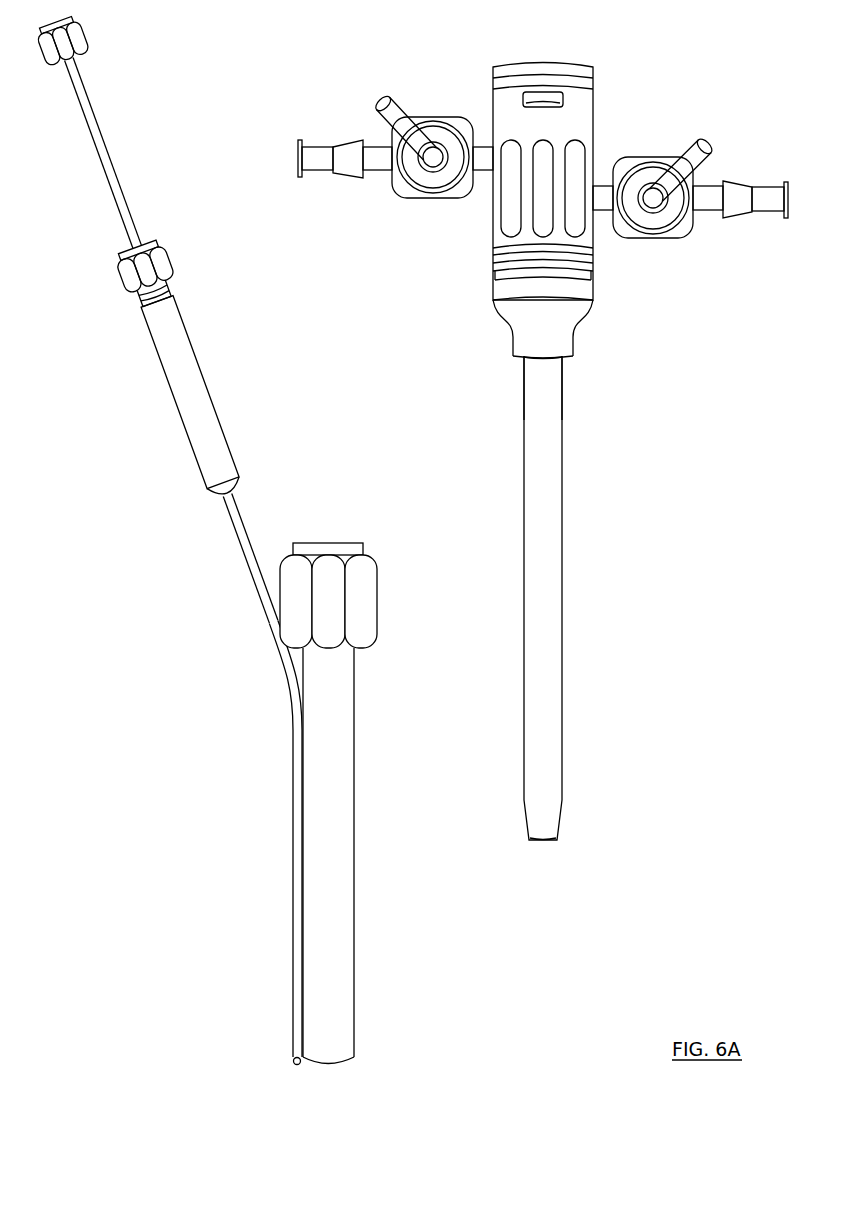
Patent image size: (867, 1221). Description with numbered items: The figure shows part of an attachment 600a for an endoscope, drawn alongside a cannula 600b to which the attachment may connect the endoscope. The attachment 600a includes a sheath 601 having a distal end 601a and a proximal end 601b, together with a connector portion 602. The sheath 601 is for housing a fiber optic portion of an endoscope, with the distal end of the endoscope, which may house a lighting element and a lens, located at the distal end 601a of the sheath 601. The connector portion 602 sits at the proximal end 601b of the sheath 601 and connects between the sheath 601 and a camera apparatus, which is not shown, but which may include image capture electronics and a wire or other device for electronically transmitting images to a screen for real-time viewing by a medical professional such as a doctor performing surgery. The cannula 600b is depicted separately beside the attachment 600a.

The attachment for an endoscope 600a is at (600, 542).
The cannula 600b is at (244, 692).
The sheath 601 is at (568, 664).
The distal end of the sheath 601a is at (568, 826).
The proximal end of the sheath 601b is at (569, 369).
The connector portion 602 is at (606, 133).